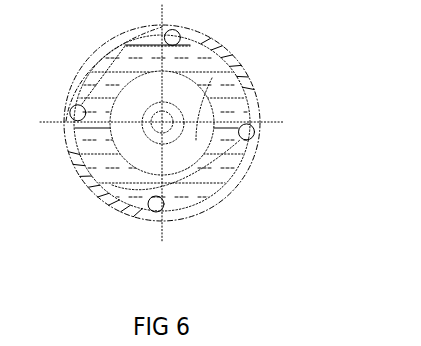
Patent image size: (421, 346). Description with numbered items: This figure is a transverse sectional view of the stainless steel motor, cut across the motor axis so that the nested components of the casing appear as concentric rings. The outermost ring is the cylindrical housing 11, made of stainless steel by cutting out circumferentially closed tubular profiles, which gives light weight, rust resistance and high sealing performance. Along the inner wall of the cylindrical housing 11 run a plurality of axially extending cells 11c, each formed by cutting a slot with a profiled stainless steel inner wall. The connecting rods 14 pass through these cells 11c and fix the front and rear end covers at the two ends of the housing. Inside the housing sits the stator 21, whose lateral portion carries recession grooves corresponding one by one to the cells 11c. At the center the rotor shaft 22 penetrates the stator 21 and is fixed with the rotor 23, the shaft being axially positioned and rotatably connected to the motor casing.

The cylindrical housing 11 is at (240, 67).
The cells 11c is at (158, 212).
The connecting rods 14 is at (151, 209).
The stator 21 is at (221, 151).
The rotor shaft 22 is at (169, 118).
The rotor 23 is at (188, 145).